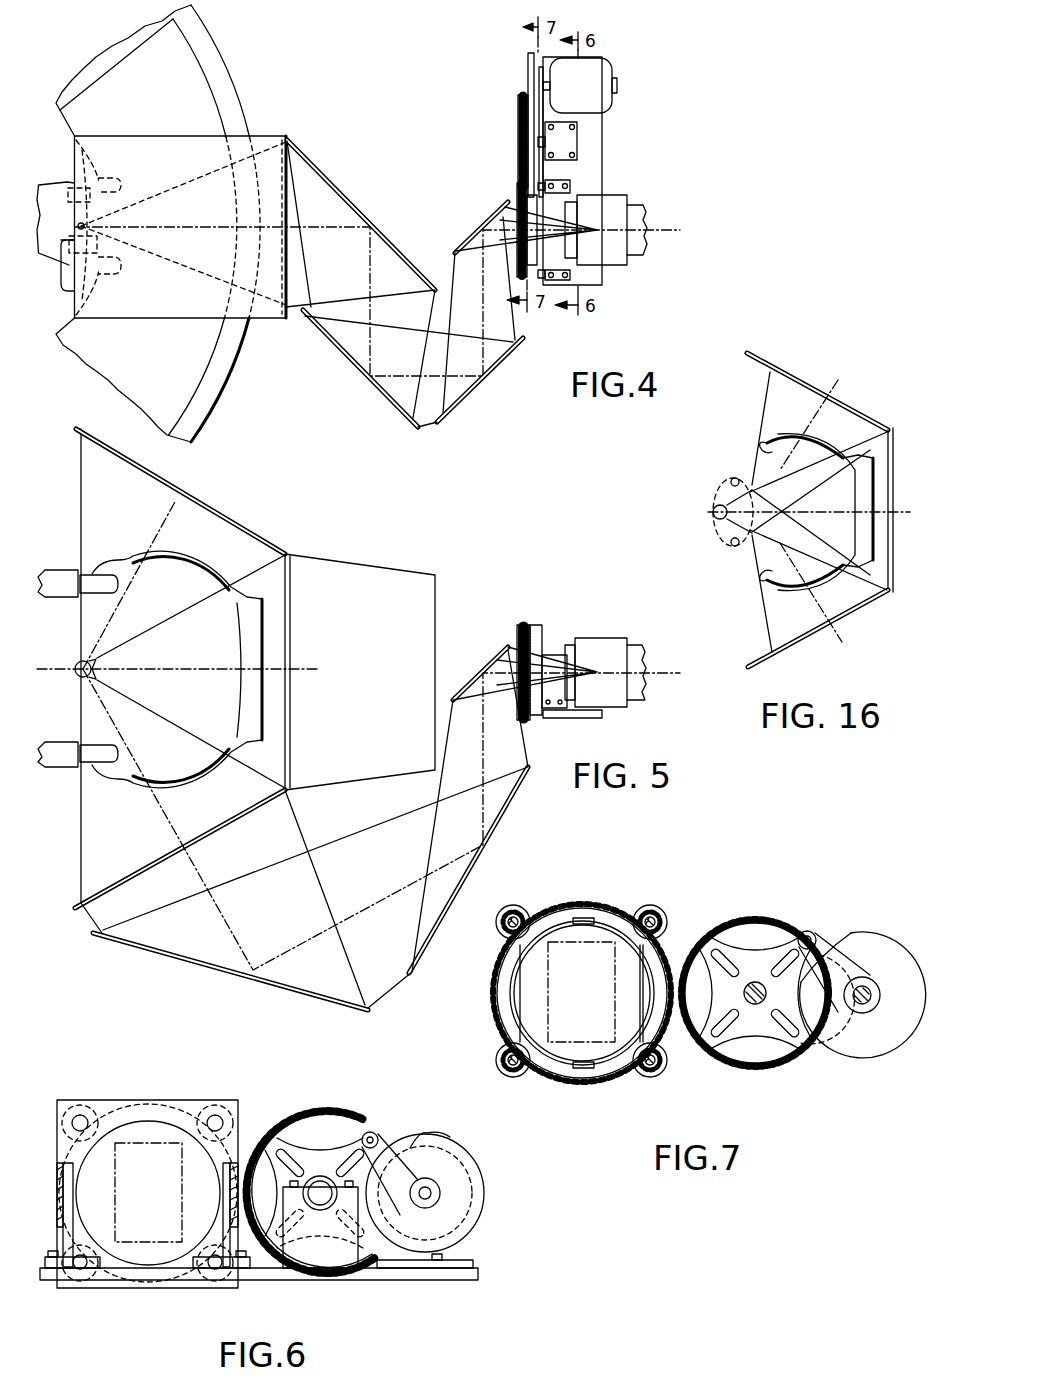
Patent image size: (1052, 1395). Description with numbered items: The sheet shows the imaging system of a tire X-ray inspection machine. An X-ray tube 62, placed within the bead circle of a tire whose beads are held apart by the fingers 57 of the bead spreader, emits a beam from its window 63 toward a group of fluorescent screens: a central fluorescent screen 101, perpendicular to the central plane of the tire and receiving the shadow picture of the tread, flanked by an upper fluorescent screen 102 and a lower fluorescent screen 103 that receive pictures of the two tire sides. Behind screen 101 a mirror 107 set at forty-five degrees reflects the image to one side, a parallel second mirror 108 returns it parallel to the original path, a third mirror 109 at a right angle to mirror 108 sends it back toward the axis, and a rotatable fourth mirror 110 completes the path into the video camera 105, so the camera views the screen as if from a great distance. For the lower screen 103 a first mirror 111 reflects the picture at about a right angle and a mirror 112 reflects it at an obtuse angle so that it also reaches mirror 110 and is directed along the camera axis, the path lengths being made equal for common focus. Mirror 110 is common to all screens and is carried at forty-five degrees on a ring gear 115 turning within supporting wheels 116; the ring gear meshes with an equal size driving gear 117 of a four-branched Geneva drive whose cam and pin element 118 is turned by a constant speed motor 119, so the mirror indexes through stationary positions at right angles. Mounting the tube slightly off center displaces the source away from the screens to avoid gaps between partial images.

In FIG. 4, the fingers 57 is at (78, 161).
In FIG. 5, the fingers 57 is at (107, 587).
In FIG. 4, the X-ray tube 62 is at (62, 279).
In FIG. 4, the window 63 is at (84, 224).
In FIG. 5, the window 63 is at (81, 678).
In FIG. 16, the window 63 is at (715, 512).
In FIG. 4, the central fluorescent screen 101 is at (285, 136).
In FIG. 5, the central fluorescent screen 101 is at (297, 561).
In FIG. 16, the central fluorescent screen 101 is at (888, 525).
In FIG. 4, the upper fluorescent screen 102 is at (211, 156).
In FIG. 5, the upper fluorescent screen 102 is at (226, 514).
In FIG. 16, the upper fluorescent screen 102 is at (807, 387).
In FIG. 5, the lower fluorescent screen 103 is at (130, 883).
In FIG. 16, the lower fluorescent screen 103 is at (788, 650).
In FIG. 4, the camera 105 is at (612, 255).
In FIG. 5, the camera 105 is at (605, 645).
In FIG. 4, the mirror 107 is at (347, 192).
In FIG. 5, the mirror 107 is at (342, 770).
In FIG. 4, the second mirror 108 is at (343, 353).
In FIG. 4, the third mirror 109 is at (460, 403).
In FIG. 4, the fourth mirror 110 is at (472, 235).
In FIG. 5, the fourth mirror 110 is at (468, 690).
In FIG. 7, the fourth mirror 110 is at (568, 1043).
In FIG. 6, the fourth mirror 110 is at (167, 1140).
In FIG. 5, the first mirror 111 is at (217, 970).
In FIG. 5, the mirror 112 is at (508, 810).
In FIG. 4, the ring gear 115 is at (517, 208).
In FIG. 7, the ring gear 115 is at (588, 902).
In FIG. 7, the supporting wheels 116 is at (497, 1053).
In FIG. 4, the driving gear 117 is at (530, 125).
In FIG. 7, the driving gear 117 is at (777, 907).
In FIG. 6, the driving gear 117 is at (330, 1107).
In FIG. 7, the cam and pin element 118 is at (877, 983).
In FIG. 6, the cam and pin element 118 is at (450, 1137).
In FIG. 4, the constant speed motor 119 is at (607, 67).
In FIG. 6, the constant speed motor 119 is at (463, 1198).